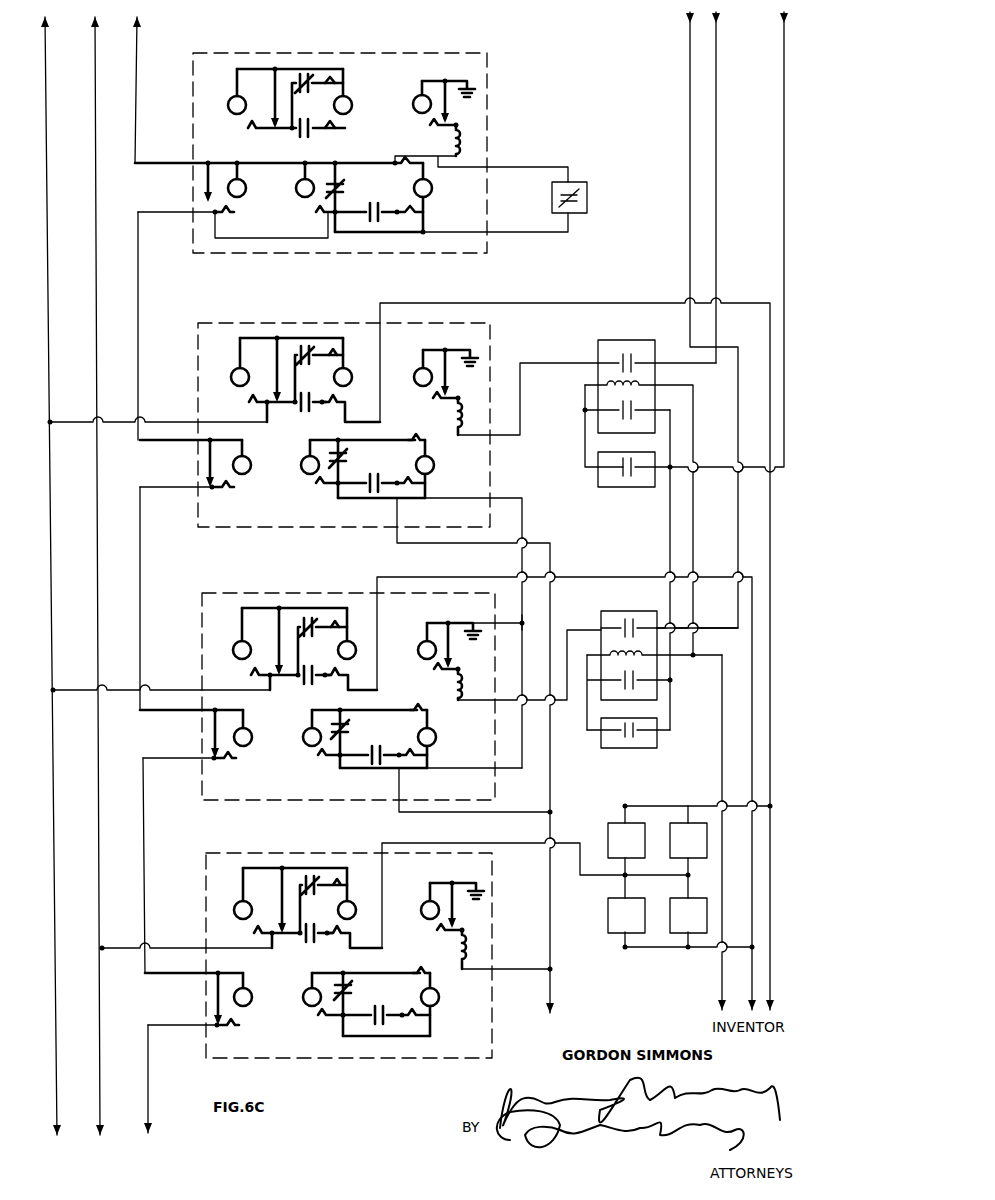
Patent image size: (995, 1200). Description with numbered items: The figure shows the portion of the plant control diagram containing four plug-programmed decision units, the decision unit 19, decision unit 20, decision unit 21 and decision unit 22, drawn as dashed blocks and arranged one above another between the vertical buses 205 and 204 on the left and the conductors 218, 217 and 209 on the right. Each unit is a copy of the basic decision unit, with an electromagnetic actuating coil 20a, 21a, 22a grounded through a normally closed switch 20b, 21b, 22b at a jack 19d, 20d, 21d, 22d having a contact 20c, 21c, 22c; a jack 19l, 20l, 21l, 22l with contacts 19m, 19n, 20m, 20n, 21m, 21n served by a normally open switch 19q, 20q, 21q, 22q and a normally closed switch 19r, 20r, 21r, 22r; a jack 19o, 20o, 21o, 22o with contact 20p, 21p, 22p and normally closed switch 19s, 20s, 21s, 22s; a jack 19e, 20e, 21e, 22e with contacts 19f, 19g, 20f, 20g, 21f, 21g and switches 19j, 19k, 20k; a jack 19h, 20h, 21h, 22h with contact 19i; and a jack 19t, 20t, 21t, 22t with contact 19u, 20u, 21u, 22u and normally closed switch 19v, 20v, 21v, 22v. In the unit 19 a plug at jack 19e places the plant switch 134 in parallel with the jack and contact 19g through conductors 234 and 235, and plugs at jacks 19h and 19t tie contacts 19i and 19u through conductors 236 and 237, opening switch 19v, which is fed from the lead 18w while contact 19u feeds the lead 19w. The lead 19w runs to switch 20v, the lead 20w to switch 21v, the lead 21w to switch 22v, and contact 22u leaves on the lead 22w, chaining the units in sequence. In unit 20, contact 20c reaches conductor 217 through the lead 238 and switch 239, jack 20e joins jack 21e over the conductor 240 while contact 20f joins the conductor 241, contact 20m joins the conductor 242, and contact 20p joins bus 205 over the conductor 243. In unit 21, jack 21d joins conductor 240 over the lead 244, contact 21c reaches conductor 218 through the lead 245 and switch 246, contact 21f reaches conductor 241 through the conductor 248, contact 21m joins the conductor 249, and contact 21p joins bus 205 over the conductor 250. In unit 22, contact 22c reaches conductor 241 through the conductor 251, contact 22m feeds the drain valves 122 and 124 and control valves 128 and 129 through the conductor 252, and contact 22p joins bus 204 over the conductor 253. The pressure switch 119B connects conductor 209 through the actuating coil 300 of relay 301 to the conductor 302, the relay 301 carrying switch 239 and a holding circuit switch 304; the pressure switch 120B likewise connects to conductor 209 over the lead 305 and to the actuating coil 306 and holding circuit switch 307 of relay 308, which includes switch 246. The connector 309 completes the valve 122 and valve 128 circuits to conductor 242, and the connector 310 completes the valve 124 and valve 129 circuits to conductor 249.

The bus 205 is at (65, 576).
The bus 204 is at (113, 576).
The lead 18w is at (140, 62).
The decision unit 19 is at (262, 53).
The jack 19o is at (228, 100).
The jack 19l is at (352, 106).
The normally closed switch 19s is at (273, 98).
The normally open switch 19q is at (303, 139).
The contact 19m is at (334, 127).
The normally closed switch 19r is at (300, 74).
The contact 19n is at (340, 84).
The jack 19d is at (415, 99).
The conductor 235 is at (523, 167).
The conductor 237 is at (269, 160).
The normally closed switch 19v is at (203, 188).
The jack 19t is at (243, 195).
The jack 19h is at (297, 188).
The normally closed switch 19k is at (341, 189).
The contact 19g is at (404, 167).
The jack 19e is at (432, 189).
The contact 19u is at (226, 214).
The conductor 236 is at (252, 240).
The contact 19i is at (316, 216).
The normally open switch 19j is at (372, 220).
The contact 19f is at (406, 207).
The conductor 234 is at (518, 233).
The switch 134 is at (587, 198).
The lead 19w is at (140, 294).
The decision unit 20 is at (265, 323).
The jack 20o is at (231, 373).
The jack 20l is at (334, 378).
The normally closed switch 20s is at (275, 368).
The contact 20p is at (248, 404).
The conductor 243 is at (184, 420).
The normally open switch 20q is at (306, 413).
The contact 20m is at (338, 406).
The normally closed switch 20r is at (302, 346).
The contact 20n is at (340, 355).
The jack 20d is at (414, 380).
The normally closed switch 20b is at (451, 378).
The contact 20c is at (432, 402).
The electromagnetic actuating coil 20a is at (464, 420).
The lead 238 is at (556, 362).
The conductor 242 is at (382, 344).
The normally closed switch 20v is at (205, 467).
The jack 20t is at (247, 475).
The jack 20h is at (302, 465).
The normally closed switch 20k is at (338, 469).
The contact 20g is at (413, 441).
The jack 20e is at (434, 466).
The contact 20f is at (405, 479).
The conductor 240 is at (523, 511).
The conductor 241 is at (440, 547).
The contact 20u is at (226, 491).
The lead 20w is at (142, 571).
The conductor 218 is at (687, 64).
The conductor 217 is at (717, 62).
The conductor 209 is at (784, 97).
The relay 301 is at (596, 343).
The switch 239 is at (626, 350).
The actuating coil 300 is at (640, 387).
The holding circuit switch 304 is at (627, 424).
The lead 305 is at (668, 539).
The switch 119B is at (627, 491).
The conductor 302 is at (697, 553).
The decision unit 21 is at (272, 593).
The jack 21o is at (233, 645).
The jack 21l is at (338, 651).
The normally closed switch 21s is at (277, 642).
The contact 21p is at (249, 677).
The conductor 250 is at (180, 689).
The normally open switch 21q is at (308, 686).
The contact 21m is at (341, 678).
The normally closed switch 21r is at (304, 617).
The contact 21n is at (342, 627).
The jack 21d is at (418, 655).
The normally closed switch 21b is at (453, 651).
The contact 21c is at (436, 674).
The electromagnetic actuating coil 21a is at (467, 688).
The lead 245 is at (570, 623).
The conductor 249 is at (378, 615).
The lead 244 is at (514, 620).
The normally closed switch 21v is at (209, 737).
The jack 21t is at (249, 747).
The jack 21h is at (305, 737).
The contact 21g is at (418, 707).
The jack 21e is at (436, 737).
The contact 21f is at (410, 746).
The conductor 248 is at (443, 813).
The contact 21u is at (230, 762).
The lead 21w is at (146, 839).
The relay 308 is at (606, 607).
The switch 246 is at (633, 617).
The actuating coil 306 is at (610, 651).
The holding circuit switch 307 is at (629, 690).
The switch 120B is at (629, 740).
The connector 309 is at (698, 805).
The drain valve 122 is at (626, 840).
The control valve 128 is at (688, 840).
The drain valve 124 is at (626, 911).
The control valve 129 is at (688, 911).
The connector 310 is at (661, 948).
The conductor 252 is at (383, 880).
The decision unit 22 is at (288, 853).
The jack 22o is at (235, 903).
The jack 22l is at (338, 911).
The normally closed switch 22s is at (280, 899).
The contact 22p is at (251, 936).
The conductor 253 is at (183, 947).
The normally open switch 22q is at (308, 944).
The contact 22m is at (343, 935).
The normally closed switch 22r is at (308, 875).
The jack 22d is at (421, 912).
The normally closed switch 22b is at (456, 908).
The contact 22c is at (440, 934).
The electromagnetic actuating coil 22a is at (470, 948).
The conductor 251 is at (517, 970).
The normally closed switch 22v is at (212, 999).
The jack 22t is at (252, 999).
The jack 22h is at (305, 992).
The jack 22e is at (439, 998).
The contact 22u is at (236, 1028).
The lead 22w is at (149, 1075).